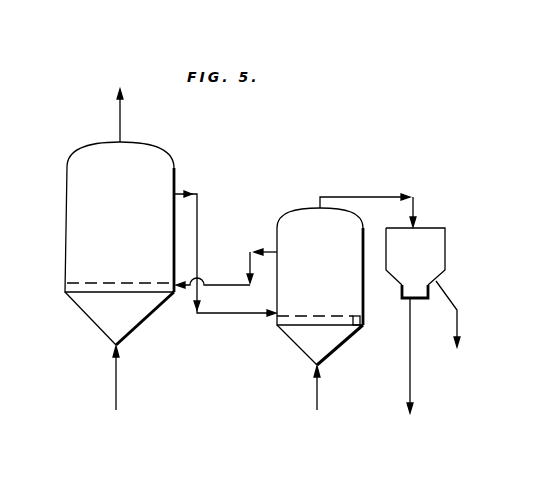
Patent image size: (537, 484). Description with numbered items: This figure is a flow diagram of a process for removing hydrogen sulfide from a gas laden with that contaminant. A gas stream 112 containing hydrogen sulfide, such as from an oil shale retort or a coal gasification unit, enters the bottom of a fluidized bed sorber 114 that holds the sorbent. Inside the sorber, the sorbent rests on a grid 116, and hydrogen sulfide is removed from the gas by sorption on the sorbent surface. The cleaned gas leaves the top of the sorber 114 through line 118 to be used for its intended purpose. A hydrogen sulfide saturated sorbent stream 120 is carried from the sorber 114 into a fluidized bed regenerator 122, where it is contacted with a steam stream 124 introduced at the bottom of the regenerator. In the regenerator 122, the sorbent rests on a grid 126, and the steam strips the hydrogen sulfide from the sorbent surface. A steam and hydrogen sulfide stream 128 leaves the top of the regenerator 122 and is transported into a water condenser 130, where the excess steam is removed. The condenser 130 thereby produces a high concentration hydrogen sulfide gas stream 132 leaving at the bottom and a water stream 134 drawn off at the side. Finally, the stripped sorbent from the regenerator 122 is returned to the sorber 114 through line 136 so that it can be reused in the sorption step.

The gas stream 112 is at (118, 378).
The fluidized bed sorber 114 is at (176, 176).
The grid 116 is at (147, 283).
The line 118 is at (122, 118).
The hydrogen sulfide saturated sorbent stream 120 is at (225, 315).
The fluidized bed regenerator 122 is at (364, 297).
The steam stream 124 is at (319, 391).
The grid 126 is at (361, 328).
The steam and hydrogen sulfide stream 128 is at (355, 197).
The water condenser 130 is at (446, 247).
The hydrogen sulfide gas stream 132 is at (412, 377).
The water stream 134 is at (459, 326).
The line 136 is at (218, 285).